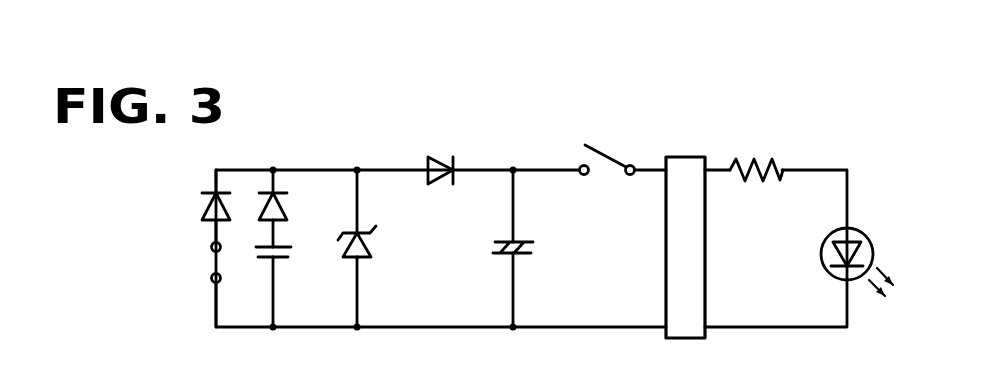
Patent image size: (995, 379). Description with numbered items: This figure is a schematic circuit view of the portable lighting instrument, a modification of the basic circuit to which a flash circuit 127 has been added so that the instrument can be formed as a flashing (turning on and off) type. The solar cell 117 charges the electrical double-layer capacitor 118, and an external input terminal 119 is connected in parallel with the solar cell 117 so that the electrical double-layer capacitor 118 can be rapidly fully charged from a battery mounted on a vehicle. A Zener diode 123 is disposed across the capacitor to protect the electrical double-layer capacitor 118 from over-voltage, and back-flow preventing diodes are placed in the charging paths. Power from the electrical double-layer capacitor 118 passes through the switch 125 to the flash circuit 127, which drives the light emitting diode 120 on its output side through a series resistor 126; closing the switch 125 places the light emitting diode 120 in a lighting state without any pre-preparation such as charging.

The solar cell 117 is at (288, 250).
The electrical double-layer capacitor 118 is at (534, 248).
The external input terminal 119 is at (211, 251).
The light emitting diode 120 is at (856, 229).
The Zener diode 123 is at (370, 245).
The switch 125 is at (602, 149).
The resistor 126 is at (760, 153).
The flash circuit 127 is at (706, 259).